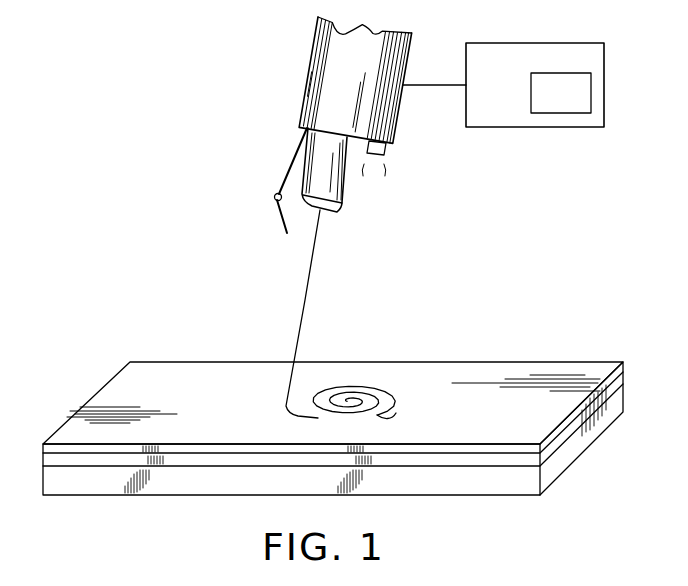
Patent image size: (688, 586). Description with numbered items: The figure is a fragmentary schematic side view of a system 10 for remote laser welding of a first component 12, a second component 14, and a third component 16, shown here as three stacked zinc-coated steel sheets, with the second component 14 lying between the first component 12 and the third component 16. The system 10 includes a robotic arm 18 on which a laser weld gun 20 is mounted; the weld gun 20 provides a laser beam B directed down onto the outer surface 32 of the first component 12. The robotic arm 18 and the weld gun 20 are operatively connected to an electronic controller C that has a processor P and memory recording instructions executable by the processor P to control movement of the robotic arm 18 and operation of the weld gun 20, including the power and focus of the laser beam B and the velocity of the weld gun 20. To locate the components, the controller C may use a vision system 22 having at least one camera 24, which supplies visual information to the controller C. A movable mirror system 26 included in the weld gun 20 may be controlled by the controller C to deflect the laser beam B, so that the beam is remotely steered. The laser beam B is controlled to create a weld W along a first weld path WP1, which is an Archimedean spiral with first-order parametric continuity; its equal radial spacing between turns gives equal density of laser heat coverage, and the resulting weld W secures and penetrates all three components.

The system 10 is at (218, 157).
The first component 12 is at (68, 433).
The second component 14 is at (55, 458).
The third component 16 is at (107, 482).
The robotic arm 18 is at (307, 73).
The laser weld gun 20 is at (348, 180).
The vision system 22 is at (403, 148).
The camera 24 is at (388, 153).
The movable mirror system 26 is at (280, 170).
The outer surface 32 is at (138, 379).
The laser beam B is at (308, 300).
The weld W is at (353, 386).
The first weld path WP1 is at (396, 413).
The electronic controller C is at (503, 85).
The processor P is at (561, 93).